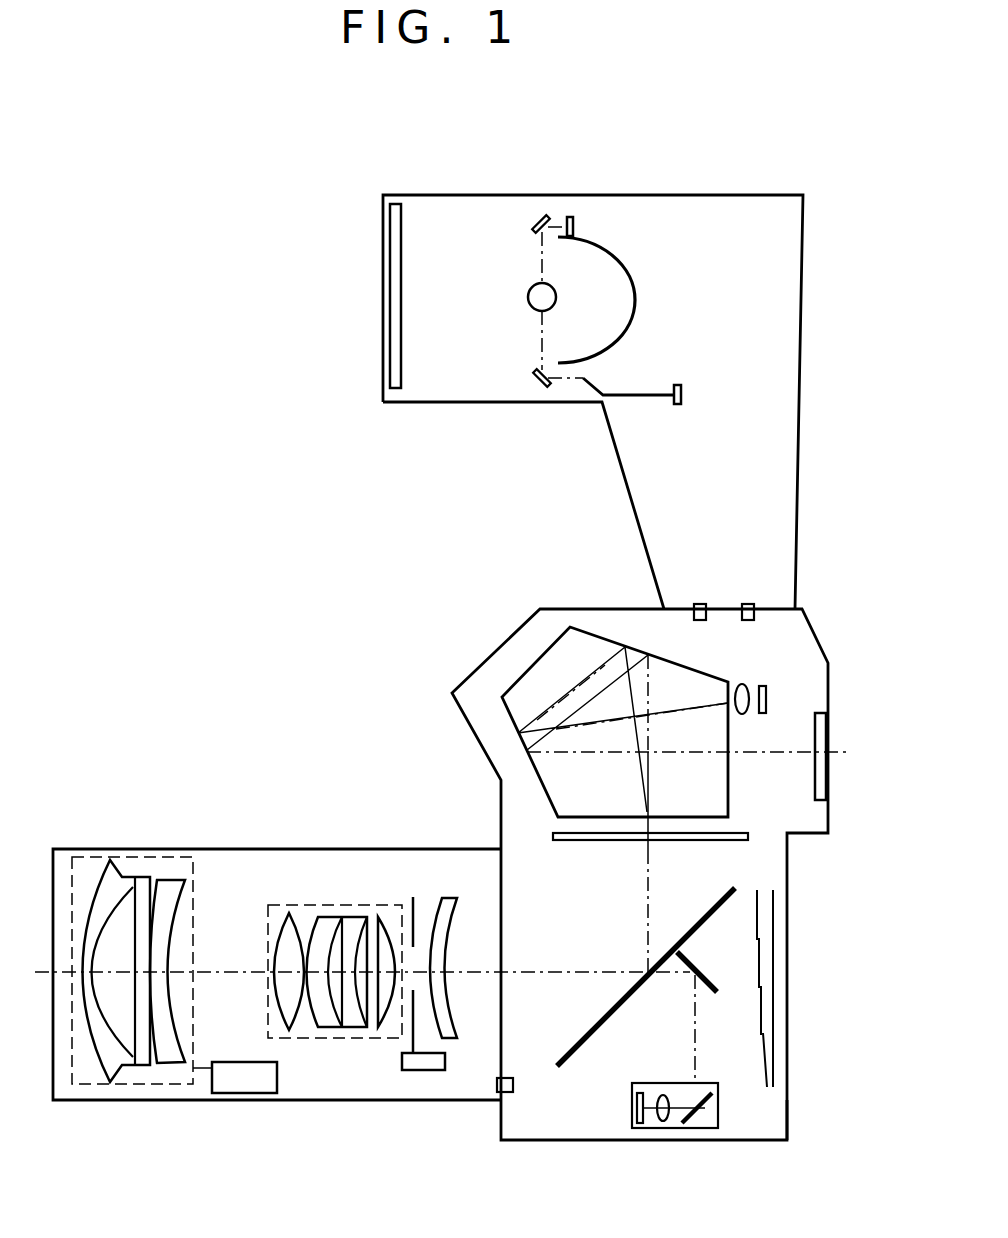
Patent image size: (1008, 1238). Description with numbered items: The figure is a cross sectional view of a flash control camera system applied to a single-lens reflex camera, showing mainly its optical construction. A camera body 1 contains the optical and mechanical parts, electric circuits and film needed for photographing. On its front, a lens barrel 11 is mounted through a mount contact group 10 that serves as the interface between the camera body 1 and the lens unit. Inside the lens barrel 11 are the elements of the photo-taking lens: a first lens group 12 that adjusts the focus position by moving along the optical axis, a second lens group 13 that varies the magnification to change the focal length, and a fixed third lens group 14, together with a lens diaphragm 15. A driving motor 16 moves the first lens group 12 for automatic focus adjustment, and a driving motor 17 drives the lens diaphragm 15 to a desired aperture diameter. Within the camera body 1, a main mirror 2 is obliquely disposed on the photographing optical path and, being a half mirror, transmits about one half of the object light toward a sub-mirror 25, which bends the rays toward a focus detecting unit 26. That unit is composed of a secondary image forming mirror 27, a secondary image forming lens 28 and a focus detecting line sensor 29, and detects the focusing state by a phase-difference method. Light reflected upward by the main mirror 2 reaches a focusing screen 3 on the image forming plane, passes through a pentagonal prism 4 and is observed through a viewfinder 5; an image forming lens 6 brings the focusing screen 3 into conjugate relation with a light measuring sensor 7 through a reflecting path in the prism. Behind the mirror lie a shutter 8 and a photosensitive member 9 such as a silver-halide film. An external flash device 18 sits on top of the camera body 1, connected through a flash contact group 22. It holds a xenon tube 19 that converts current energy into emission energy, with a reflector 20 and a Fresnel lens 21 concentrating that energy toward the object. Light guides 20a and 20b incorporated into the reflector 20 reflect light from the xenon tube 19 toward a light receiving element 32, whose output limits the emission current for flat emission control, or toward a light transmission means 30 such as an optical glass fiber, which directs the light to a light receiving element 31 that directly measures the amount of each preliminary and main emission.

The camera body 1 is at (482, 683).
The main mirror 2 is at (733, 892).
The focusing screen 3 is at (748, 833).
The pentagonal prism 4 is at (552, 658).
The viewfinder 5 is at (823, 710).
The image forming lens 6 is at (740, 690).
The light measuring sensor 7 is at (763, 683).
The shutter 8 is at (773, 1088).
The photosensitive member 9 is at (788, 1100).
The mount contact group 10 is at (505, 1091).
The lens barrel 11 is at (64, 872).
The first lens group 12 is at (137, 855).
The second lens group 13 is at (335, 903).
The third lens group 14 is at (448, 898).
The lens diaphragm 15 is at (413, 897).
The driving motor 16 is at (240, 1095).
The driving motor 17 is at (412, 1072).
The external flash device 18 is at (780, 292).
The xenon tube 19 is at (530, 307).
The reflector 20 is at (635, 282).
The light guide 20a is at (538, 218).
The light guide 20b is at (540, 393).
The Fresnel lens 21 is at (398, 390).
The flash contact group 22 is at (695, 605).
The sub-mirror 25 is at (718, 985).
The focus detecting unit 26 is at (718, 1105).
The secondary image forming mirror 27 is at (692, 1128).
The secondary image forming lens 28 is at (665, 1128).
The focus detecting line sensor 29 is at (643, 1128).
The light transmission means 30 is at (633, 395).
The light receiving element 31 is at (683, 392).
The light receiving element 32 is at (575, 222).